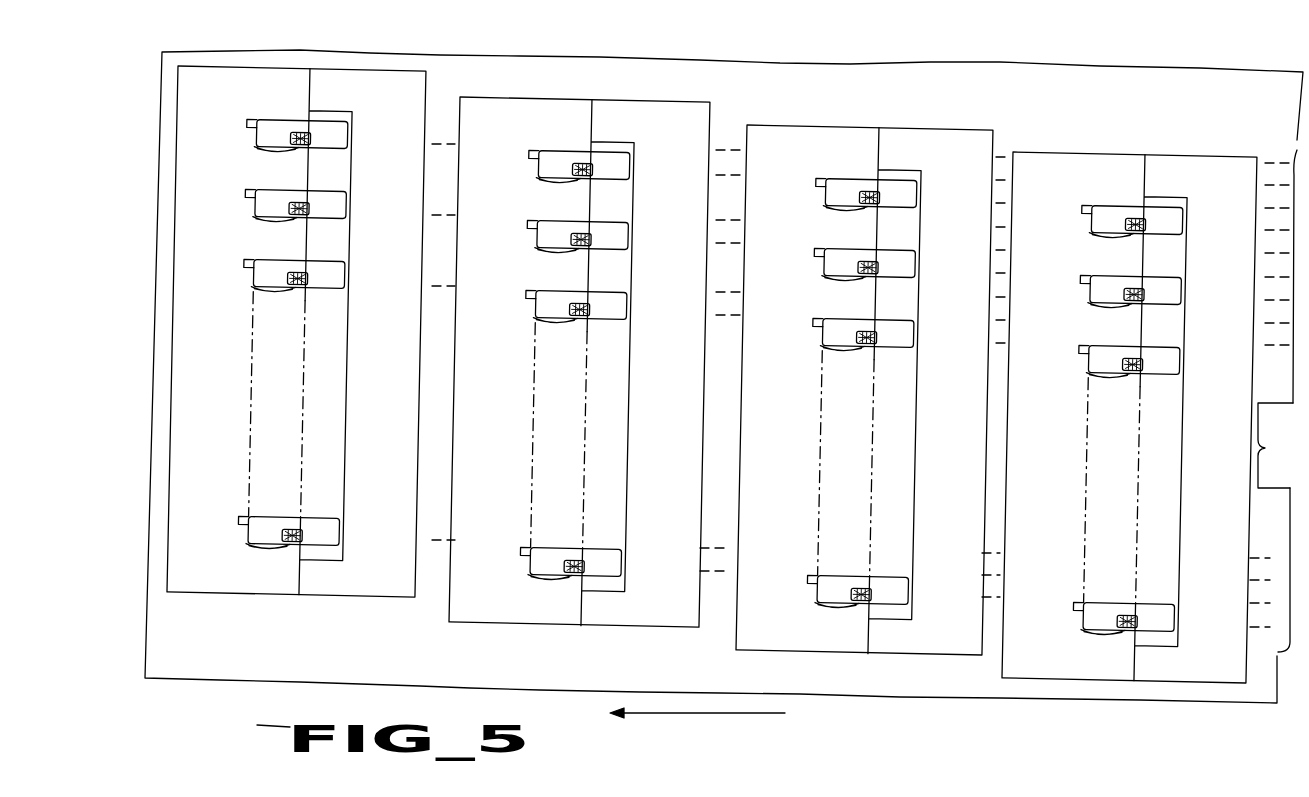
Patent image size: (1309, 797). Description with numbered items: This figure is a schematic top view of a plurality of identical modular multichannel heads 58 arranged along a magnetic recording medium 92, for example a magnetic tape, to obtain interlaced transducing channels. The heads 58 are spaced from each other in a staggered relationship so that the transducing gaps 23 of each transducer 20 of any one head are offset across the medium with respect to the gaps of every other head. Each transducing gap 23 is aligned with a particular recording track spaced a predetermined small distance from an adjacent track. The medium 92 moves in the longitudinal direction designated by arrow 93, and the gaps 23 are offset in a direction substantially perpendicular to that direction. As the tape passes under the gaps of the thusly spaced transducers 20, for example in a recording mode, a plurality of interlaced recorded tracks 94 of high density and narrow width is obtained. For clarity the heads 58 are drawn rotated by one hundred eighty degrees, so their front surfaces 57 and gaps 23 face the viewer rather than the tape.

The transducer 20 is at (340, 268).
The transducing gap 23 is at (308, 117).
The front surface 57 is at (212, 587).
The multichannel head 58 is at (775, 115).
The recording medium 92 is at (950, 697).
The arrow designating longitudinal direction 93 is at (693, 713).
The interlaced recorded tracks 94 is at (1276, 445).